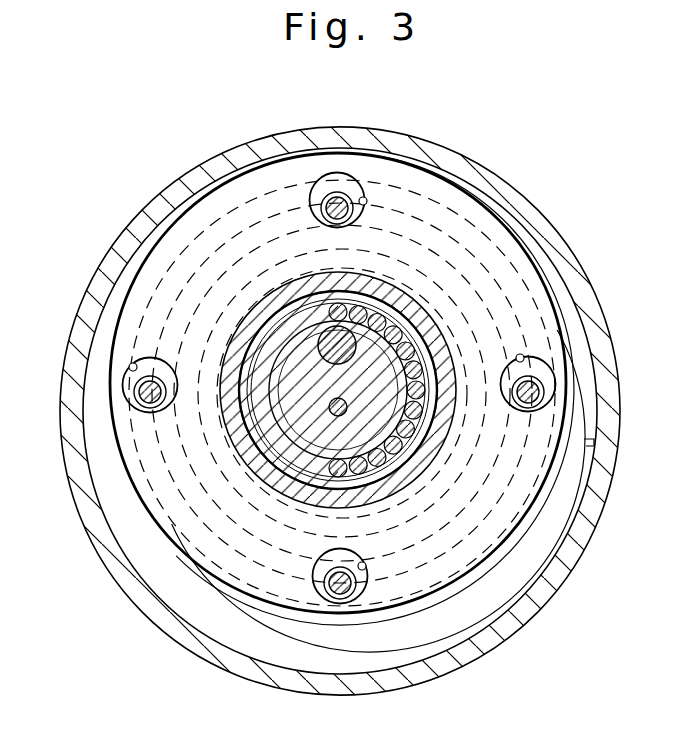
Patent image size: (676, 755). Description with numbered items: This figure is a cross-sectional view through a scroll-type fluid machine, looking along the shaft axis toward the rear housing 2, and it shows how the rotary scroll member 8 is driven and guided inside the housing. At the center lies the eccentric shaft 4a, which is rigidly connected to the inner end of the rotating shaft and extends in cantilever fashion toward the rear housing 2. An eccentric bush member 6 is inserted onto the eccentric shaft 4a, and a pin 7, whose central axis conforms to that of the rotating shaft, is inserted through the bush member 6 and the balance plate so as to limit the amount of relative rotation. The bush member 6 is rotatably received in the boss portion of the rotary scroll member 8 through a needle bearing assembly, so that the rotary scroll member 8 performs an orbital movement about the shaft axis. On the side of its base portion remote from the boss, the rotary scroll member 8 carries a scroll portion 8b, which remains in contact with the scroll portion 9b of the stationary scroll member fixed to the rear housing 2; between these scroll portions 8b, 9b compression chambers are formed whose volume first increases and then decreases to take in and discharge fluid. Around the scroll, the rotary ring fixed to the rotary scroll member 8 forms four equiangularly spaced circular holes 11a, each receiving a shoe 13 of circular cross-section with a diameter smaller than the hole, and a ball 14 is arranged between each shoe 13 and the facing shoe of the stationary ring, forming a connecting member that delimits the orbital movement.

The rear housing 2 is at (526, 223).
The eccentric shaft 4a is at (323, 360).
The eccentric bush member 6 is at (350, 503).
The pin 7 is at (348, 408).
The rotary scroll member 8 is at (126, 460).
The scroll portion 8b is at (134, 311).
The scroll portion 9b is at (586, 444).
The holes 11a is at (367, 203).
The shoe 13 is at (310, 198).
The ball 14 is at (321, 210).